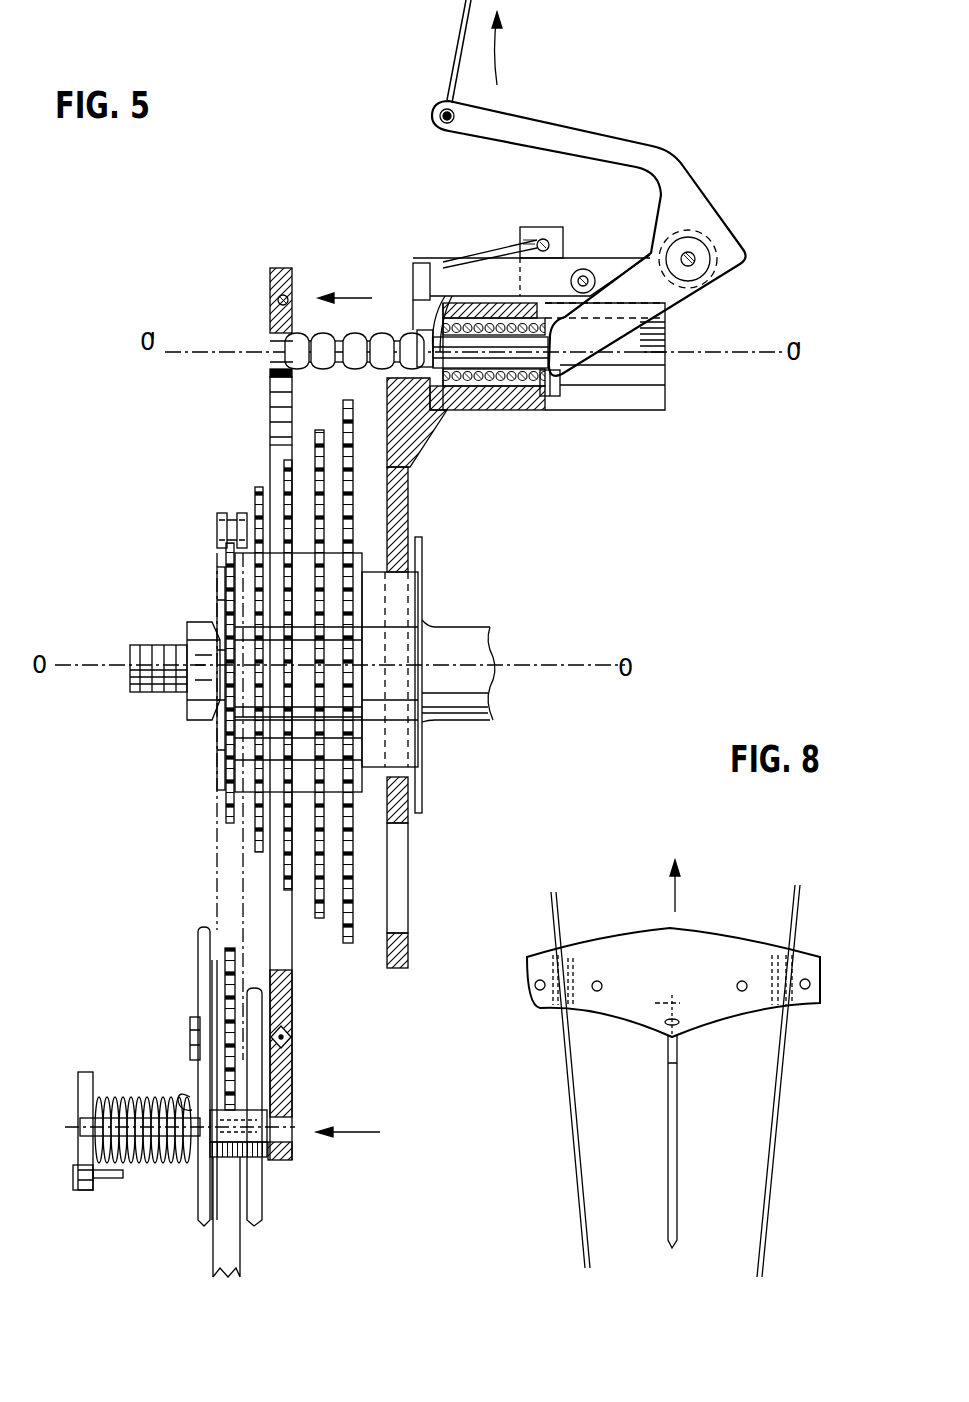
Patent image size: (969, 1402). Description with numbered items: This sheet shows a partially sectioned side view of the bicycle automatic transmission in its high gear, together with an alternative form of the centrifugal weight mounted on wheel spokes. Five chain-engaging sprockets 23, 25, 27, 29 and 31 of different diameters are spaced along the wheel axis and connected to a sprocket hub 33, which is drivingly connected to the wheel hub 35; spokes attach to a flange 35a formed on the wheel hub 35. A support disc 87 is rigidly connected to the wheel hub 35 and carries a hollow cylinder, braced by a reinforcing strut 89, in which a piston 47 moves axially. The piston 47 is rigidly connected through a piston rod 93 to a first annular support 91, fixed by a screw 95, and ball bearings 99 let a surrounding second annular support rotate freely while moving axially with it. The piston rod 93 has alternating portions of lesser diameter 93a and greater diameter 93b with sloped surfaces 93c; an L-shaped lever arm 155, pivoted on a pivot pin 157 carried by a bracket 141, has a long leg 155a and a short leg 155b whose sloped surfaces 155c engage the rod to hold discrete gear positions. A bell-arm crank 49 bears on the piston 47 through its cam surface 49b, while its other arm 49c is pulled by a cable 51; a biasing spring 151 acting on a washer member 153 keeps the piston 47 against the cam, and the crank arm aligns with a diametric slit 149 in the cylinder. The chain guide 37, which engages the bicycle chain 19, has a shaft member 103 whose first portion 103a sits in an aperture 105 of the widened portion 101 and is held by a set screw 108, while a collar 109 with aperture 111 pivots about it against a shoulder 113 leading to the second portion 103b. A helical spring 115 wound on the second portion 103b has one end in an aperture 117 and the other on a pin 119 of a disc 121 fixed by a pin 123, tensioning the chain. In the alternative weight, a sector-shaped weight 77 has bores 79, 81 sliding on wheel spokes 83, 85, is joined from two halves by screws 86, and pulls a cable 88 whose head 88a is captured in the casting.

In FIG. 5, the bicycle chain 19 is at (216, 846).
In FIG. 5, the chain-engaging sprocket 23 is at (226, 818).
In FIG. 5, the chain-engaging sprocket 25 is at (256, 852).
In FIG. 5, the chain-engaging sprocket 27 is at (288, 885).
In FIG. 5, the chain-engaging sprocket 29 is at (320, 919).
In FIG. 5, the chain-engaging sprocket 31 is at (350, 944).
In FIG. 5, the sprocket hub 33 is at (218, 580).
In FIG. 5, the wheel hub 35 is at (392, 750).
In FIG. 5, the flange 35a is at (425, 582).
In FIG. 5, the chain guide 37 is at (116, 1203).
In FIG. 5, the piston 47 is at (528, 395).
In FIG. 5, the bell-arm crank 49 is at (734, 260).
In FIG. 5, the cam surface 49b is at (588, 350).
In FIG. 5, the arm of bell-arm crank 49c is at (574, 136).
In FIG. 5, the cable 51 is at (458, 44).
In FIG. 8, the weight 77 is at (718, 1010).
In FIG. 8, the bore 79 is at (570, 966).
In FIG. 8, the bore 81 is at (775, 957).
In FIG. 8, the wheel spoke 83 is at (574, 1140).
In FIG. 8, the wheel spoke 85 is at (778, 1142).
In FIG. 8, the screws 86 is at (536, 990).
In FIG. 5, the support disc 87 is at (408, 510).
In FIG. 8, the cable 88 is at (677, 1200).
In FIG. 8, the cable head 88a is at (672, 1012).
In FIG. 5, the reinforcing strut 89 is at (420, 455).
In FIG. 5, the first annular support 91 is at (293, 1006).
In FIG. 5, the piston rod 93 is at (379, 332).
In FIG. 5, the portion of lesser diameter 93a is at (311, 370).
In FIG. 5, the portion of greater diameter 93b is at (355, 334).
In FIG. 5, the sloped surfaces 93c is at (310, 368).
In FIG. 5, the screw 95 is at (270, 372).
In FIG. 5, the ball bearings 99 is at (279, 302).
In FIG. 5, the widened portion 101 is at (292, 1062).
In FIG. 5, the shaft member 103 is at (240, 1170).
In FIG. 5, the first portion 103a is at (265, 1165).
In FIG. 5, the second portion 103b is at (162, 1165).
In FIG. 5, the aperture 105 is at (268, 1125).
In FIG. 5, the set screw 108 is at (293, 1156).
In FIG. 5, the collar 109 is at (205, 1228).
In FIG. 5, the aperture 111 is at (242, 1225).
In FIG. 5, the shoulder 113 is at (197, 1112).
In FIG. 5, the helical spring 115 is at (128, 1097).
In FIG. 5, the aperture 117 is at (200, 1095).
In FIG. 5, the pin 119 is at (105, 1185).
In FIG. 5, the disc 121 is at (78, 1085).
In FIG. 5, the pin 123 is at (78, 1128).
In FIG. 5, the bracket 141 is at (492, 410).
In FIG. 5, the diametric slit 149 is at (634, 411).
In FIG. 5, the biasing spring 151 is at (462, 411).
In FIG. 5, the washer member 153 is at (552, 398).
In FIG. 5, the L-shaped lever arm 155 is at (414, 264).
In FIG. 5, the long leg 155a is at (568, 268).
In FIG. 5, the short leg 155b is at (416, 300).
In FIG. 5, the sloped surfaces 155c is at (436, 296).
In FIG. 5, the pivot pin 157 is at (592, 275).